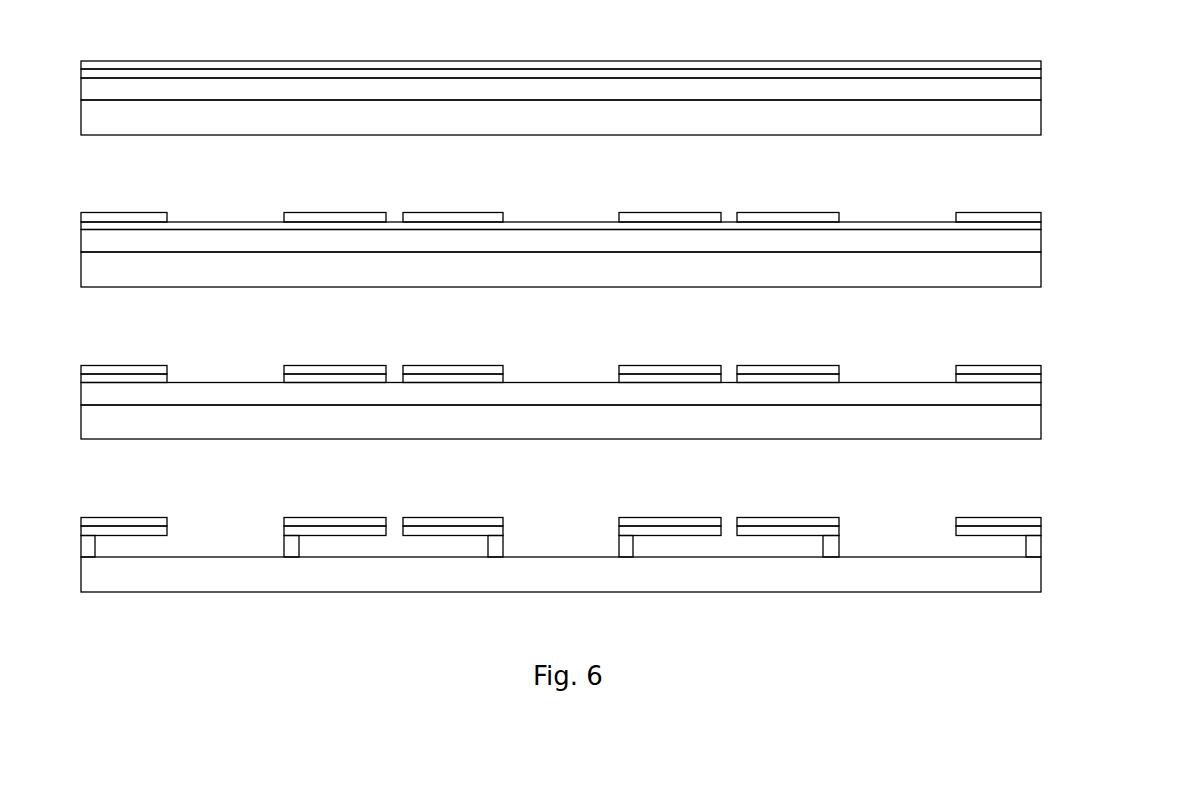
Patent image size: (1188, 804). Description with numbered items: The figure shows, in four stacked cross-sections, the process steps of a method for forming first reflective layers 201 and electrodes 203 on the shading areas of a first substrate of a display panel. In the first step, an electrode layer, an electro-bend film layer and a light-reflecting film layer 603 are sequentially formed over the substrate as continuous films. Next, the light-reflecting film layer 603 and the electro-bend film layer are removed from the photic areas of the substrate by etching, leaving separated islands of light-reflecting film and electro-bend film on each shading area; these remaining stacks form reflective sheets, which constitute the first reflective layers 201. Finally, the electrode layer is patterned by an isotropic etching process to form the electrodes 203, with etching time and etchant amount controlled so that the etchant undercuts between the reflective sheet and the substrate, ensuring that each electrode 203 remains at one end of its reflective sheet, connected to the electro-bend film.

The light-reflecting film layer 603 is at (600, 47).
The electrode 203 is at (1036, 551).
The first reflective layer 201 is at (625, 510).